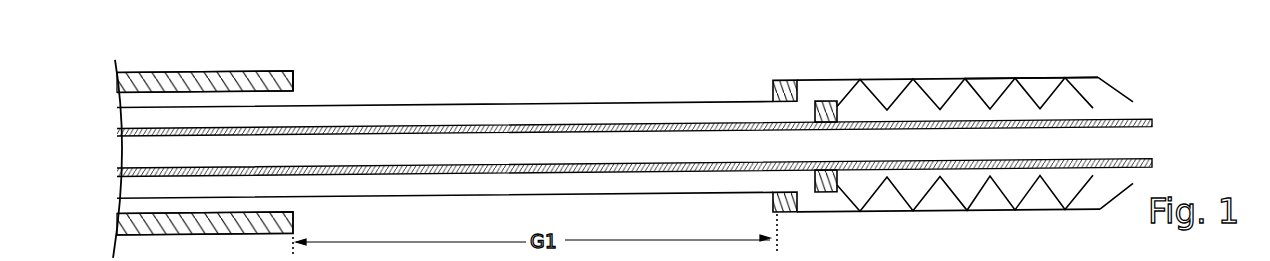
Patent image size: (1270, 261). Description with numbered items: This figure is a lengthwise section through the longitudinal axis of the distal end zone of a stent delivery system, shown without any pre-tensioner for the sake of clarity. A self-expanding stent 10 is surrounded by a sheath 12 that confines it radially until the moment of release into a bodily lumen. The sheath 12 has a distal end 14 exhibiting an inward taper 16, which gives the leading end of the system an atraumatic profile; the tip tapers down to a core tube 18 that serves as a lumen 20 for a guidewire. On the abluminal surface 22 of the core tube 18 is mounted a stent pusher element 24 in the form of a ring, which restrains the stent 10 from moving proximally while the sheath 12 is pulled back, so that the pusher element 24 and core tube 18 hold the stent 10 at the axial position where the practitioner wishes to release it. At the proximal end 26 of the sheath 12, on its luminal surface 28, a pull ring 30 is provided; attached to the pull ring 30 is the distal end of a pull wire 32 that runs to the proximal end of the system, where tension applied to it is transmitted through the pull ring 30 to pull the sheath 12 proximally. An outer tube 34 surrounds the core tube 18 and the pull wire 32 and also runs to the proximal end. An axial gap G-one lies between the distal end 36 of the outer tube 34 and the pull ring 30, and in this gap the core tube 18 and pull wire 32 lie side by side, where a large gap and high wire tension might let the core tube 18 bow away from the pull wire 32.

The stent 10 is at (880, 92).
The sheath 12 is at (1028, 78).
The distal end 14 is at (1098, 78).
The inward taper 16 is at (1122, 95).
The core tube 18 is at (658, 123).
The lumen 20 is at (443, 158).
The abluminal surface 22 is at (702, 121).
The stent pusher element 24 is at (829, 101).
The proximal end 26 is at (812, 80).
The luminal surface 28 is at (981, 77).
The pull ring 30 is at (787, 78).
The pull wire 32 is at (553, 103).
The outer tube 34 is at (262, 71).
The distal end 36 is at (293, 82).